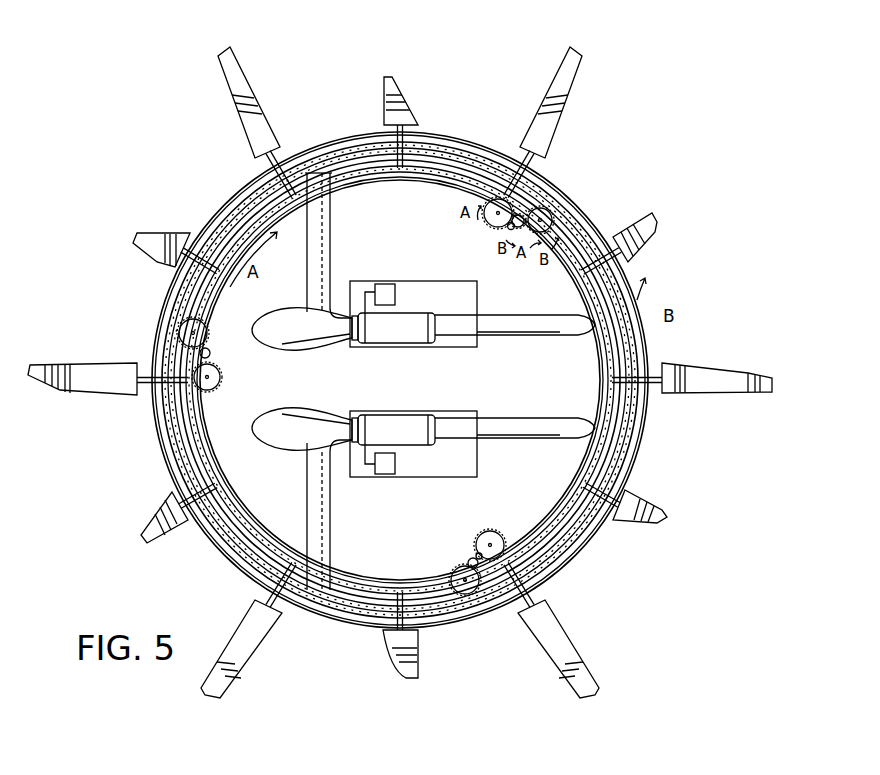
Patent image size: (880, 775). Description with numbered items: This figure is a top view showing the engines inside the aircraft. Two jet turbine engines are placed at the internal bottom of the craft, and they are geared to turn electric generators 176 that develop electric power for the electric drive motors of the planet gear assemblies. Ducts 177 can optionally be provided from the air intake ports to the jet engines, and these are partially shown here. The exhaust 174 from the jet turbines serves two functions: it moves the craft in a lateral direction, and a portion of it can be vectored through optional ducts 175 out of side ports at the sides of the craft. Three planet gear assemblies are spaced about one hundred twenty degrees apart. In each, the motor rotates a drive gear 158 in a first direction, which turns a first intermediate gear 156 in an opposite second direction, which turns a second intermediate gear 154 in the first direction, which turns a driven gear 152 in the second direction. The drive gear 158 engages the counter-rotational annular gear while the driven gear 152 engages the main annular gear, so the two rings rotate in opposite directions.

The driven gear 152 is at (552, 221).
The second intermediate gear 154 is at (525, 221).
The first intermediate gear 156 is at (514, 222).
The drive gear 158 is at (493, 226).
The exhaust 174 is at (262, 348).
The ducts 175 is at (320, 258).
The electric generators 176 is at (388, 292).
The ducts 177 is at (500, 422).